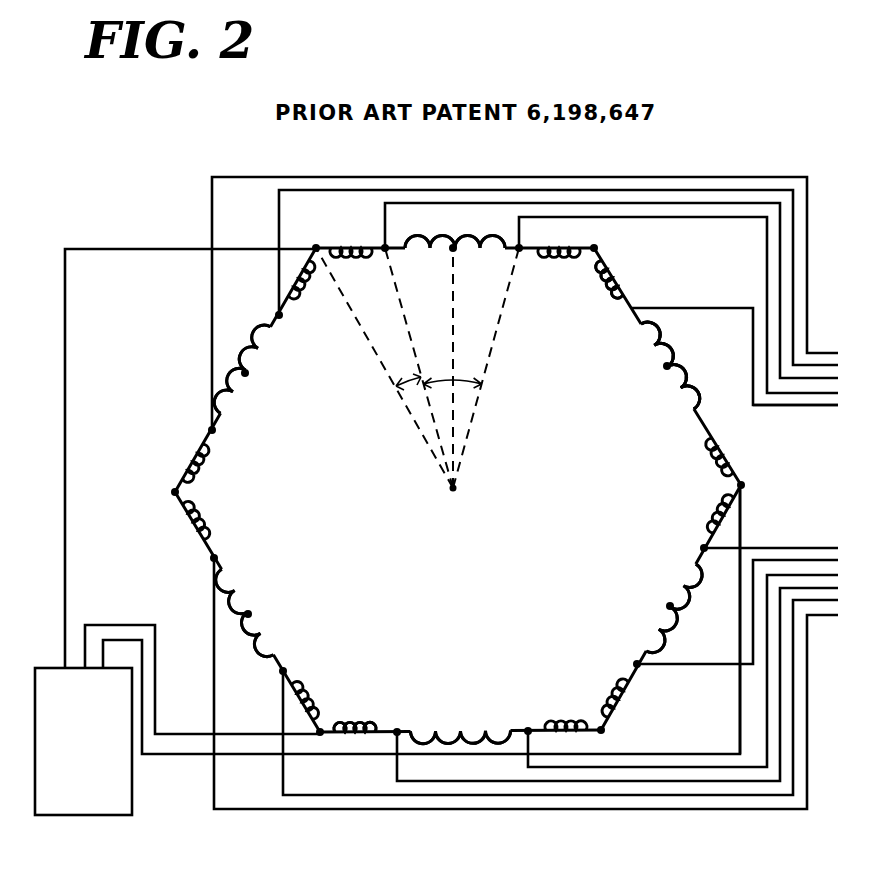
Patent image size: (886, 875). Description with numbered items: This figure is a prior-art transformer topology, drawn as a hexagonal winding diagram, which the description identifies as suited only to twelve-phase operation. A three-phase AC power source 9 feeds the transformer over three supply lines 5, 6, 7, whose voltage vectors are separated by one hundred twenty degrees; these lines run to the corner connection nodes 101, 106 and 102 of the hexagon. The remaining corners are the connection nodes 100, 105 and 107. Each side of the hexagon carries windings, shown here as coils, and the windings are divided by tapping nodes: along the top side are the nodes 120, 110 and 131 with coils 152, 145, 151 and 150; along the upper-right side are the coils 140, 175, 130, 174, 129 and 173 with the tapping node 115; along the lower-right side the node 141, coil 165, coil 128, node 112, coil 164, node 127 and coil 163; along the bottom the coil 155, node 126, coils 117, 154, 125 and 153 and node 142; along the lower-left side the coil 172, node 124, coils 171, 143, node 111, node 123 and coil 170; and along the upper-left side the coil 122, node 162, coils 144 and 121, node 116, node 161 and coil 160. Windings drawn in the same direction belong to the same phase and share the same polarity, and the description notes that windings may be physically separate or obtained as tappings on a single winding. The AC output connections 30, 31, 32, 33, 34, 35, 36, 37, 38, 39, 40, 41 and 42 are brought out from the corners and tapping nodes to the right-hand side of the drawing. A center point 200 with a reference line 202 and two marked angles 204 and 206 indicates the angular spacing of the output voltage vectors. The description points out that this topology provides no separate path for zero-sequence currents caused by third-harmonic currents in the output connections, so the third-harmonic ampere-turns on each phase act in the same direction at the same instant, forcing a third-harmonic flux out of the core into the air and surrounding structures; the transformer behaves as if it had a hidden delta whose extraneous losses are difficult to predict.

The power line 5 is at (66, 462).
The power line 6 is at (200, 734).
The power line 7 is at (176, 758).
The three phase AC power source 9 is at (132, 794).
The output lead 30 is at (752, 358).
The output lead 31 is at (836, 408).
The lead 32 is at (744, 540).
The output lead 33 is at (836, 546).
The output lead 34 is at (680, 664).
The output lead 35 is at (765, 730).
The output lead 36 is at (687, 776).
The output lead 37 is at (744, 796).
The output lead 38 is at (727, 810).
The output lead 39 is at (692, 176).
The output lead 40 is at (760, 189).
The output lead 41 is at (766, 246).
The output lead 42 is at (766, 274).
The vertex node 100 is at (316, 246).
The vertex node 101 is at (316, 733).
The vertex node 102 is at (735, 486).
The vertex node 105 is at (598, 246).
The vertex node 106 is at (172, 494).
The vertex node 107 is at (604, 731).
The tap node 110 is at (454, 254).
The tap node 111 is at (280, 603).
The tap node 112 is at (666, 607).
The tap node 115 is at (662, 368).
The tap node 116 is at (248, 378).
The winding 117 is at (463, 728).
The tap node 120 is at (384, 254).
The winding 121 is at (288, 320).
The winding 122 is at (220, 437).
The tap node 123 is at (212, 563).
The tap node 124 is at (286, 671).
The winding 125 is at (390, 727).
The tap node 126 is at (520, 728).
The tap node 127 is at (633, 664).
The winding 128 is at (704, 558).
The winding 129 is at (684, 425).
The winding 130 is at (634, 316).
The tap node 131 is at (520, 254).
The winding 140 is at (612, 262).
The tap node 141 is at (700, 551).
The tap node 142 is at (402, 731).
The winding 143 is at (245, 550).
The winding 144 is at (222, 420).
The winding 145 is at (494, 240).
The winding 150 is at (560, 244).
The winding 151 is at (413, 254).
The winding 152 is at (356, 246).
The winding 153 is at (343, 742).
The winding 154 is at (427, 743).
The winding 155 is at (544, 726).
The winding 160 is at (276, 292).
The tap node 161 is at (244, 354).
The tap node 162 is at (184, 464).
The winding 163 is at (606, 700).
The winding 164 is at (670, 641).
The winding 165 is at (730, 512).
The winding 170 is at (192, 534).
The winding 171 is at (248, 650).
The winding 172 is at (312, 718).
The winding 173 is at (733, 464).
The winding 174 is at (683, 370).
The winding 175 is at (628, 290).
The center point 200 is at (455, 494).
The reference line 202 is at (360, 332).
The 15 degree angle 204 is at (430, 405).
The 30 degree angle 206 is at (478, 403).